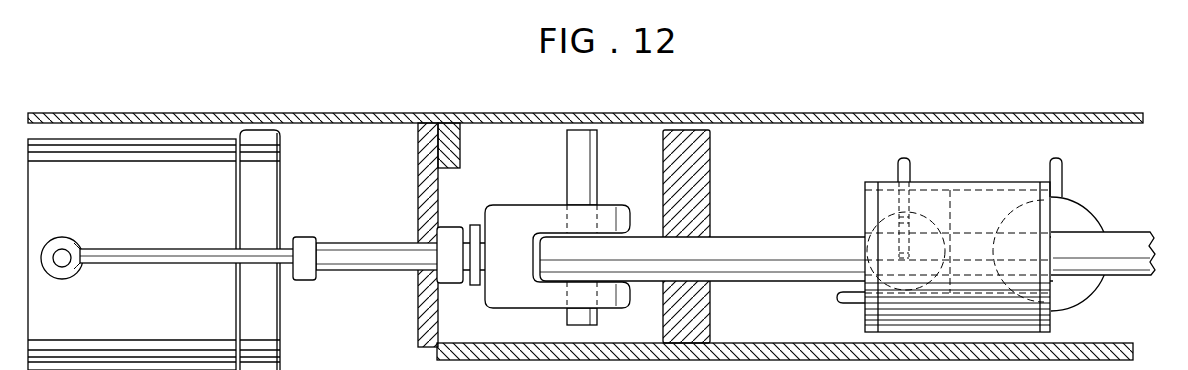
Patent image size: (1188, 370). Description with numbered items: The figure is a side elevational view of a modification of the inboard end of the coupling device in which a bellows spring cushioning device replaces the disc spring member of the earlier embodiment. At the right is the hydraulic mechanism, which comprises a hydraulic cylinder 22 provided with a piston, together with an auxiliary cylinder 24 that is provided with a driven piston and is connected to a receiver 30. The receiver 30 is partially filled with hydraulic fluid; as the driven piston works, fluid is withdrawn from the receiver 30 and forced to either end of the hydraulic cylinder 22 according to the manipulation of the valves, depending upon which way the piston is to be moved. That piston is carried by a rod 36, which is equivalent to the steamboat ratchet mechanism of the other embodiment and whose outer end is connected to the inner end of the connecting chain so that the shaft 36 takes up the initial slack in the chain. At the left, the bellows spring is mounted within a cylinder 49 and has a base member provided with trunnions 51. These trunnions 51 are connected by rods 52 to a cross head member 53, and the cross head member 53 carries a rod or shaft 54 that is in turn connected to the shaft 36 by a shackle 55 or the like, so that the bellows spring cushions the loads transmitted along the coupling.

The cylinder 49 is at (152, 311).
The trunnions 51 is at (64, 253).
The rods 52 is at (167, 254).
The cross head member 53 is at (319, 239).
The rod or shaft 54 is at (361, 252).
The shackle 55 is at (522, 217).
The rod 36 is at (765, 248).
The hydraulic cylinder 22 is at (957, 197).
The auxiliary cylinder 24 is at (883, 230).
The receiver 30 is at (1079, 218).